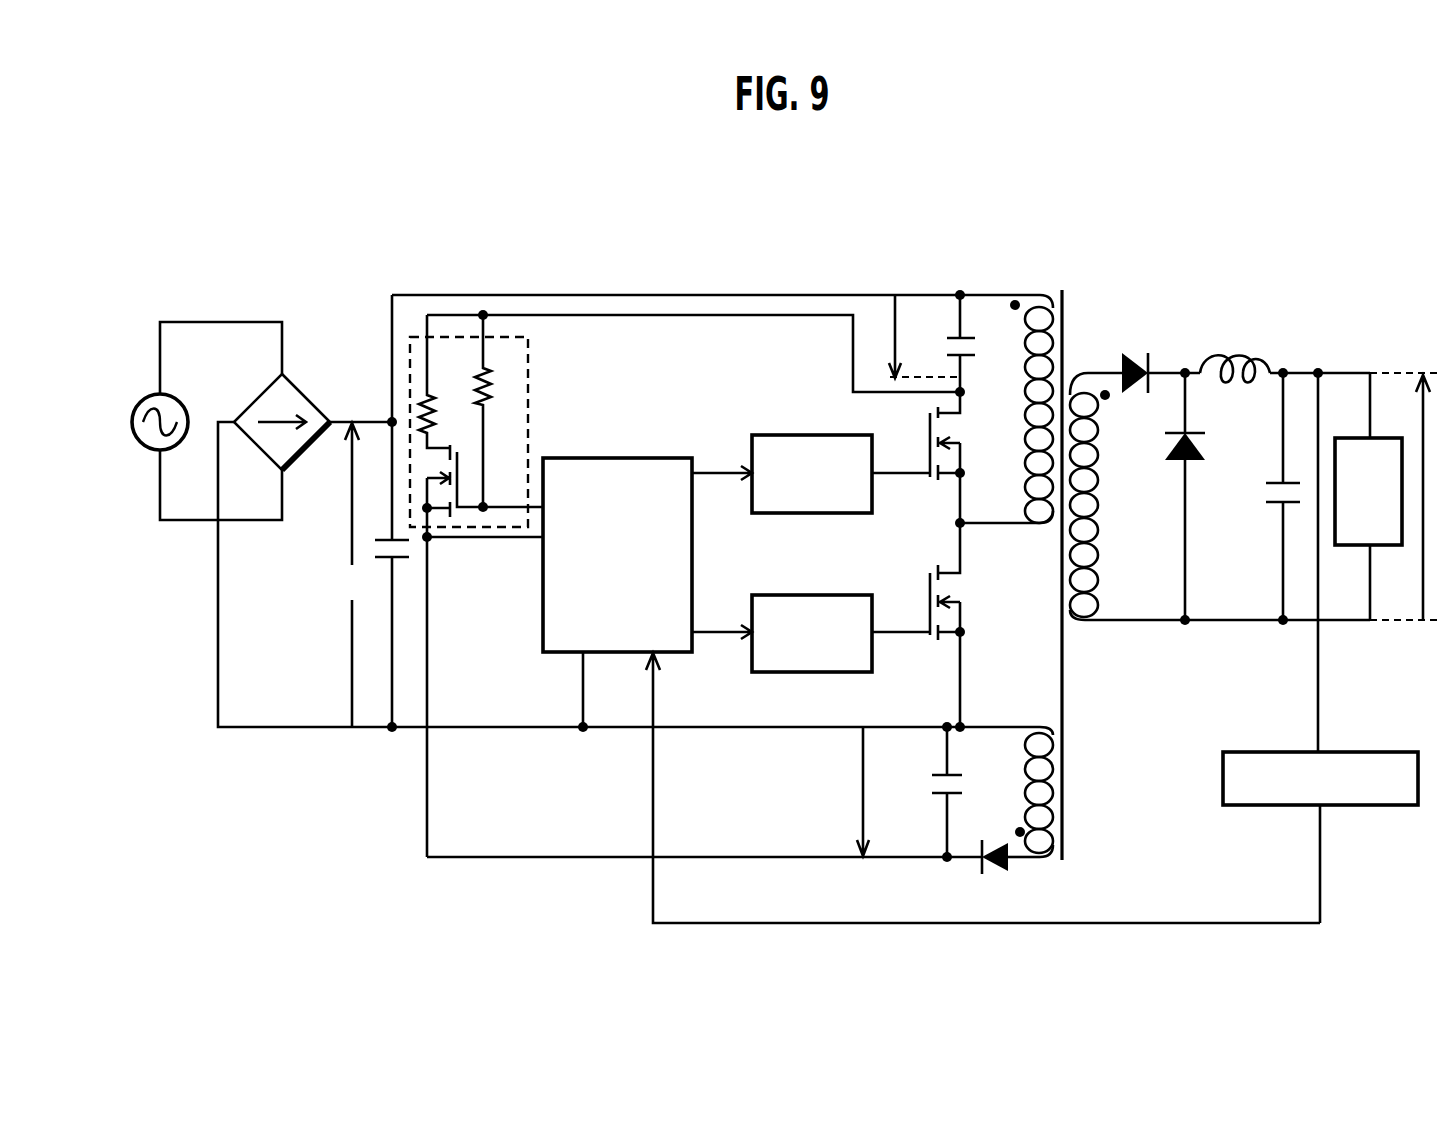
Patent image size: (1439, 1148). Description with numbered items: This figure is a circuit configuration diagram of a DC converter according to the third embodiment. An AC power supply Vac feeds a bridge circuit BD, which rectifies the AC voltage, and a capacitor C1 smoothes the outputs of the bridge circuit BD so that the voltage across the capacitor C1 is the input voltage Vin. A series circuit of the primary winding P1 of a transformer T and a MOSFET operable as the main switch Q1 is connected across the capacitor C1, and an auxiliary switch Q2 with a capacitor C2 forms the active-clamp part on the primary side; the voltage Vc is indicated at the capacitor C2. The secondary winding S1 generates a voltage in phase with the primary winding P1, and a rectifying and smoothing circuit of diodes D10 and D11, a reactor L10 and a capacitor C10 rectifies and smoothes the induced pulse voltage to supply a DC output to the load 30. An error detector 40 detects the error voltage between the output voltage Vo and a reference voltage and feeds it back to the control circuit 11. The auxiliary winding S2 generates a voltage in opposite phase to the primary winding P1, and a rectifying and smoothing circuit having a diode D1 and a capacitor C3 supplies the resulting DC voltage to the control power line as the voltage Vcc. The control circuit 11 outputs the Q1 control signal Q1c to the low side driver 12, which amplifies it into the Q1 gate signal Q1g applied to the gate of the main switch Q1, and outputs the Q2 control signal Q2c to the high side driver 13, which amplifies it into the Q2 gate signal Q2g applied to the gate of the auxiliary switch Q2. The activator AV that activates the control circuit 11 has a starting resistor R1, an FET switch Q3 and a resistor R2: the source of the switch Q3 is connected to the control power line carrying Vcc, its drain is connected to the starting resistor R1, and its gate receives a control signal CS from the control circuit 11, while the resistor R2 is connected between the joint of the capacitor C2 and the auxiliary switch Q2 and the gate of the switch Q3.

The control circuit 11 is at (606, 457).
The low side driver 12 is at (790, 673).
The high side driver 13 is at (820, 434).
The load 30 is at (1360, 547).
The error detector 40 is at (1288, 752).
The AC power supply Vac is at (152, 395).
The bridge circuit BD is at (312, 392).
The input voltage Vin is at (343, 575).
The capacitor C1 is at (657, 511).
The activator AV is at (528, 340).
The starting resistor R1 is at (689, 379).
The resistor R2 is at (499, 413).
The FET switch Q3 is at (482, 632).
The control signal CS is at (475, 508).
The Q2 control signal Q2c is at (710, 472).
The Q1 control signal Q1c is at (710, 631).
The Q2 gate signal Q2g is at (903, 476).
The Q1 gate signal Q1g is at (903, 635).
The auxiliary switch Q2 is at (969, 457).
The main switch Q1 is at (969, 627).
The capacitor C2 is at (949, 341).
The capacitor voltage Vc is at (913, 336).
The capacitor C3 is at (704, 792).
The voltage Vcc is at (855, 791).
The diode D1 is at (1010, 877).
The transformer T is at (1061, 288).
The primary winding P1 is at (1006, 409).
The secondary winding S1 is at (1127, 496).
The auxiliary winding S2 is at (1016, 792).
The diode D10 is at (1161, 356).
The reactor L10 is at (1285, 351).
The diode D11 is at (1267, 499).
The capacitor C10 is at (1261, 499).
The output voltage Vo is at (1404, 496).